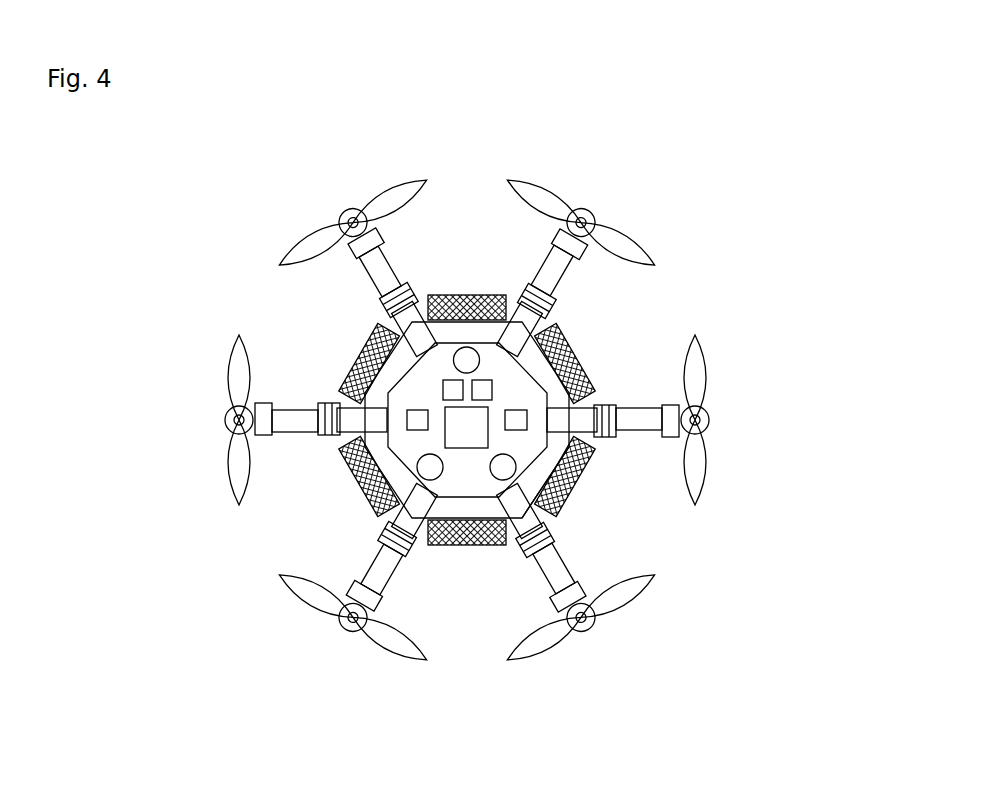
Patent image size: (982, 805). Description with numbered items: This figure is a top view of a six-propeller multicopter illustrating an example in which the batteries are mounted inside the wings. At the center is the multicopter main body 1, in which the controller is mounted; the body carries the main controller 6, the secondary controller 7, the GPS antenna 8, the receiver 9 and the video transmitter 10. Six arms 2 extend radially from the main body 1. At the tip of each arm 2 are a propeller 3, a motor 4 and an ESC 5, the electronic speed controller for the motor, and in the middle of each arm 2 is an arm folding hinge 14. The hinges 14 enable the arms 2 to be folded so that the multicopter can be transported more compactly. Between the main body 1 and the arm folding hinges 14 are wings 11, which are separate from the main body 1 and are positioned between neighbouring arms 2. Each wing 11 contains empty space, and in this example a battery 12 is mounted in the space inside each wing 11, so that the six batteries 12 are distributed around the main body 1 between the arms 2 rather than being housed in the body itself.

The multicopter main body 1 is at (552, 378).
The arm 2 is at (363, 263).
The propeller 3 is at (623, 232).
The motor 4 is at (589, 210).
The ESC (motor controller) 5 is at (560, 233).
The main controller 6 is at (407, 416).
The secondary controller 7 is at (443, 390).
The GPS antenna 8 is at (462, 348).
The receiver 9 is at (445, 421).
The video transmitter 10 is at (527, 418).
The wing 11 is at (580, 478).
The battery 12 is at (470, 298).
The arm folding hinge 14 is at (404, 290).